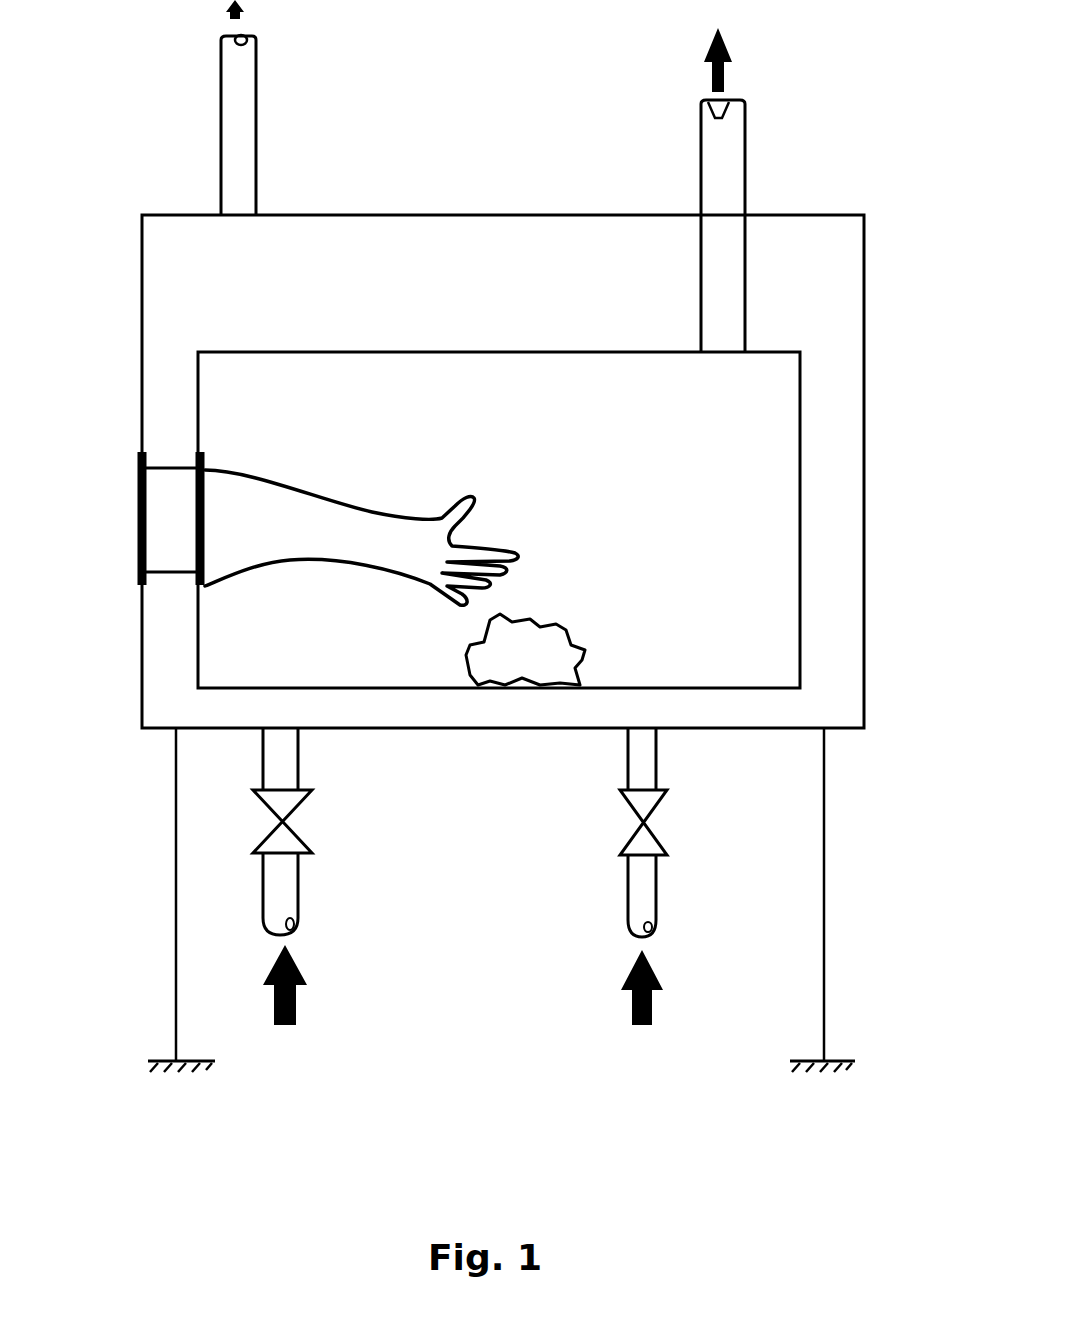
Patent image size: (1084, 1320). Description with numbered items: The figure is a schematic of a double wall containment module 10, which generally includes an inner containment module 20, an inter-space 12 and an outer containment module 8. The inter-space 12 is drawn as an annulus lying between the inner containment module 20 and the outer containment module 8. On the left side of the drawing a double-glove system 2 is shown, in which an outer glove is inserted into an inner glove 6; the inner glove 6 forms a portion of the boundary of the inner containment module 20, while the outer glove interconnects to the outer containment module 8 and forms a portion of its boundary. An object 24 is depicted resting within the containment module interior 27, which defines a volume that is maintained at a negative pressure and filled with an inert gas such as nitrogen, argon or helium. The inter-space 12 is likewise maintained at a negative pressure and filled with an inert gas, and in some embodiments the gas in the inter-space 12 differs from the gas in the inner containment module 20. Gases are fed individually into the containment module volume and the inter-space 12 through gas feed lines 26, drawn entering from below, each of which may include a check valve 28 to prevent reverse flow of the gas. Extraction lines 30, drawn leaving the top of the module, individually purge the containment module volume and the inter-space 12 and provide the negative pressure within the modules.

The double-glove system 2 is at (98, 577).
The inner glove 6 is at (343, 500).
The outer containment module 8 is at (866, 565).
The double wall containment module 10 is at (808, 195).
The inter-space 12 is at (503, 471).
The inner containment module 20 is at (197, 662).
The sample / object 24 is at (472, 680).
The gas feed lines 26 is at (486, 890).
The containment module interior 27 is at (499, 520).
The check valve 28 is at (300, 838).
The extraction lines 30 is at (257, 165).